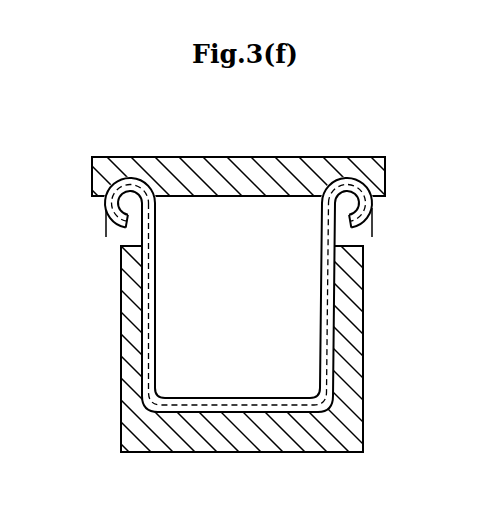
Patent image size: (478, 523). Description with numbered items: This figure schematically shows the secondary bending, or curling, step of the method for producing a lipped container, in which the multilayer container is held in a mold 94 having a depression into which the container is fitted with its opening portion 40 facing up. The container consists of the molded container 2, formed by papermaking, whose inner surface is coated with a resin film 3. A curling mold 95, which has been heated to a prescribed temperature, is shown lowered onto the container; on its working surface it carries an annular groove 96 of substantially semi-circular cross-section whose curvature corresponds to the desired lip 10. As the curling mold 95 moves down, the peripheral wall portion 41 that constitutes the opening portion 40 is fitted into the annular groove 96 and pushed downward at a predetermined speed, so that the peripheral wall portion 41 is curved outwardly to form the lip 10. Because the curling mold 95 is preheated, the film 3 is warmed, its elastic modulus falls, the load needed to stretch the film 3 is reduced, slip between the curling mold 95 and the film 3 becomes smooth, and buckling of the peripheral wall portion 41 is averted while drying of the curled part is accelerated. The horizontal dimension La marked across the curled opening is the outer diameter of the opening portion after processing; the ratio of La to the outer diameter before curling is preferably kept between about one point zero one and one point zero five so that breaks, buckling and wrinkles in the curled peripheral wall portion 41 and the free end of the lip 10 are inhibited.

The lip 10 is at (386, 181).
The molded container 2 is at (350, 338).
The mold 94 is at (364, 249).
The resin film 3 is at (314, 287).
The peripheral wall portion 41 is at (334, 149).
The curling mold 95 is at (320, 204).
The annular groove 96 is at (321, 183).
The opening portion 40 is at (336, 184).
The outer diameter of the opening portion after processing La is at (80, 222).